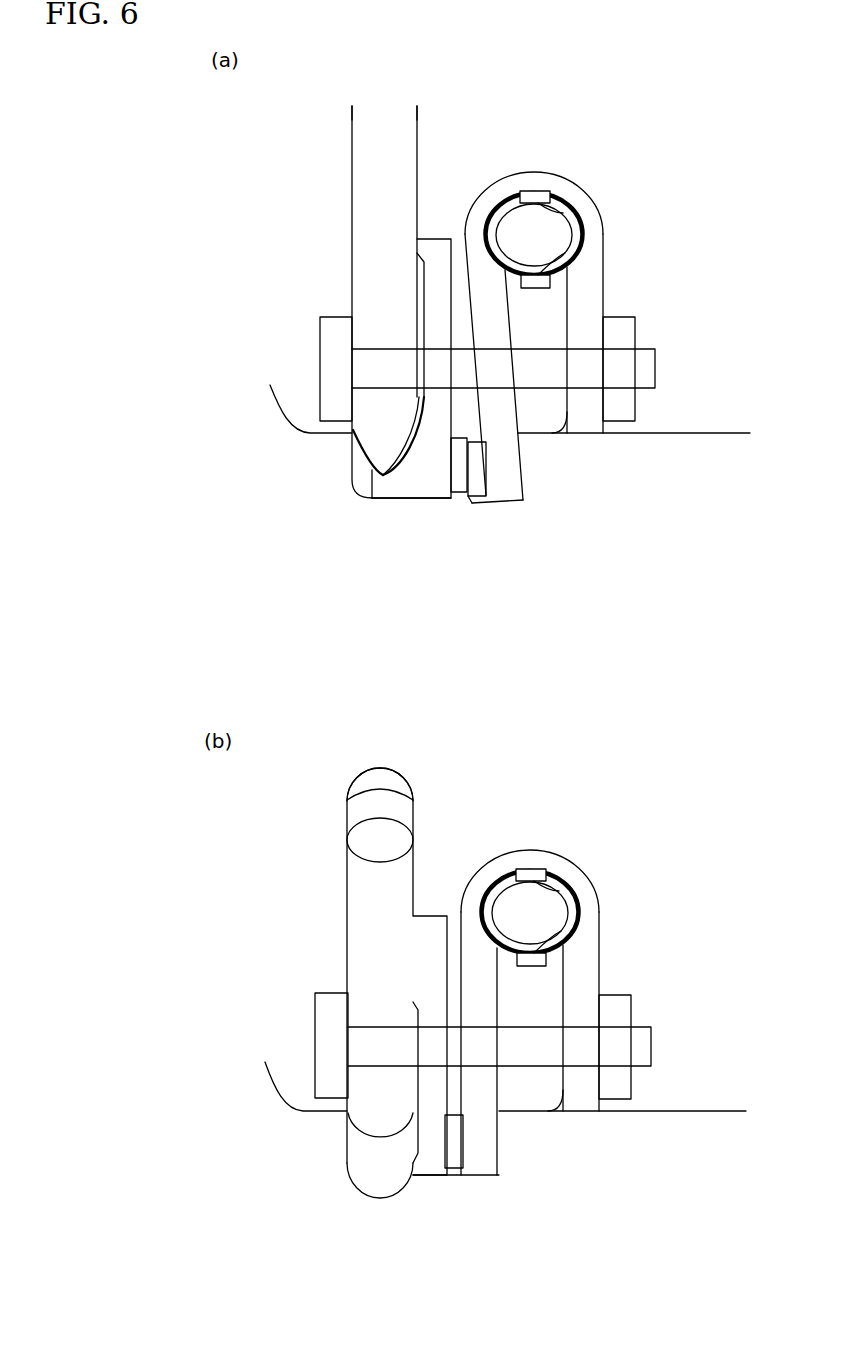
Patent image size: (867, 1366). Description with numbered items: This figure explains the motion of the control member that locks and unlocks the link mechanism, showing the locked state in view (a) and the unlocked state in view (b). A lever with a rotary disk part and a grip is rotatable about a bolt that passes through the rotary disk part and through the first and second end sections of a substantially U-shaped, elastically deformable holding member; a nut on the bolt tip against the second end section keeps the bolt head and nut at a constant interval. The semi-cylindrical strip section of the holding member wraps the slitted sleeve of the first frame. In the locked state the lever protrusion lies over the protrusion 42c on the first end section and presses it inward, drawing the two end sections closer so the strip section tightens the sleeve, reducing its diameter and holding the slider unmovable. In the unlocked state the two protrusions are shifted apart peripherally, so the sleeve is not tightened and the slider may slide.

The protrusion 42c is at (470, 440).